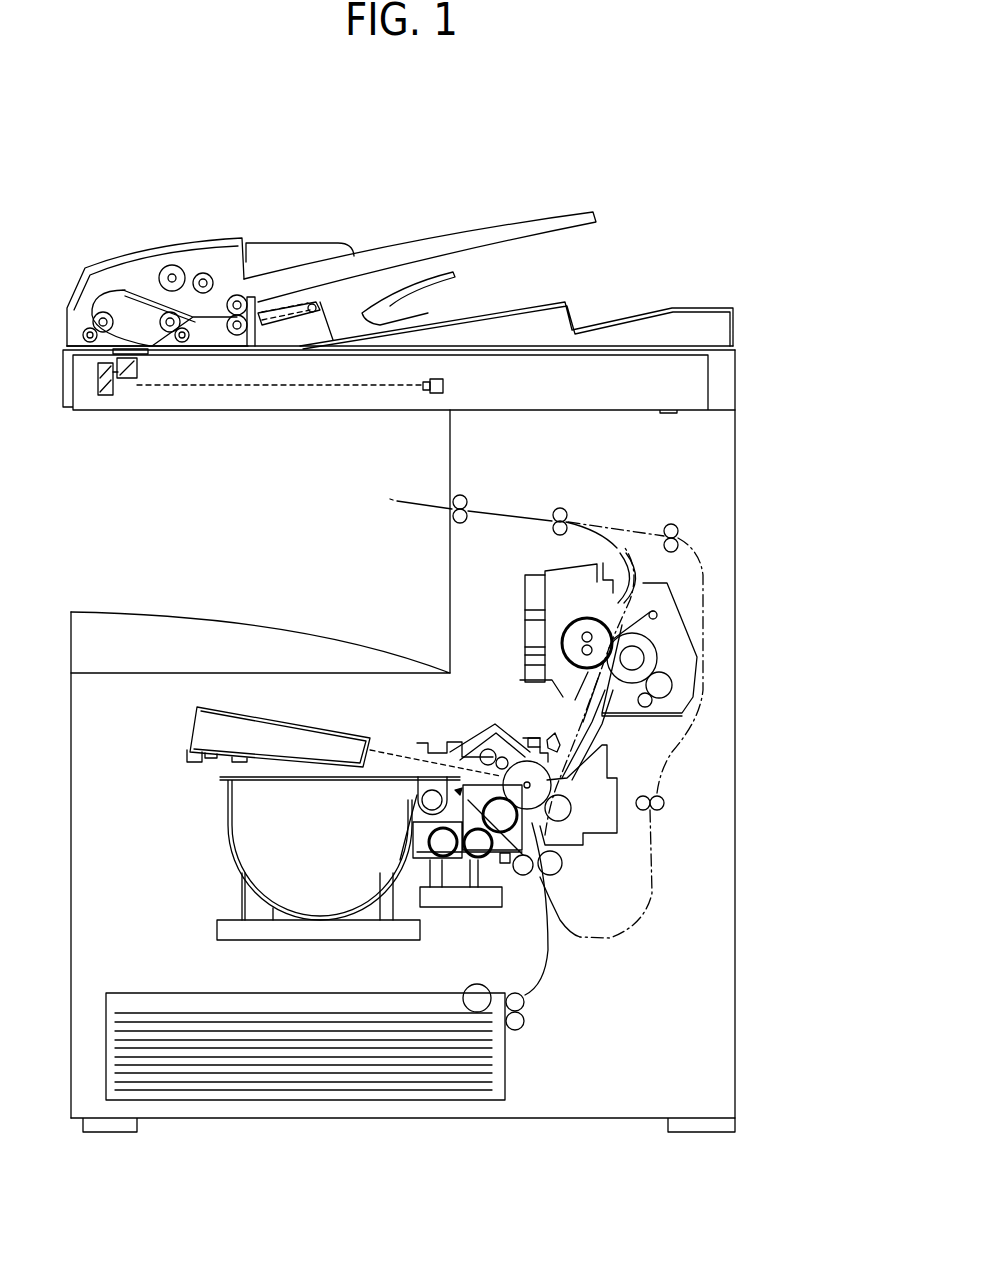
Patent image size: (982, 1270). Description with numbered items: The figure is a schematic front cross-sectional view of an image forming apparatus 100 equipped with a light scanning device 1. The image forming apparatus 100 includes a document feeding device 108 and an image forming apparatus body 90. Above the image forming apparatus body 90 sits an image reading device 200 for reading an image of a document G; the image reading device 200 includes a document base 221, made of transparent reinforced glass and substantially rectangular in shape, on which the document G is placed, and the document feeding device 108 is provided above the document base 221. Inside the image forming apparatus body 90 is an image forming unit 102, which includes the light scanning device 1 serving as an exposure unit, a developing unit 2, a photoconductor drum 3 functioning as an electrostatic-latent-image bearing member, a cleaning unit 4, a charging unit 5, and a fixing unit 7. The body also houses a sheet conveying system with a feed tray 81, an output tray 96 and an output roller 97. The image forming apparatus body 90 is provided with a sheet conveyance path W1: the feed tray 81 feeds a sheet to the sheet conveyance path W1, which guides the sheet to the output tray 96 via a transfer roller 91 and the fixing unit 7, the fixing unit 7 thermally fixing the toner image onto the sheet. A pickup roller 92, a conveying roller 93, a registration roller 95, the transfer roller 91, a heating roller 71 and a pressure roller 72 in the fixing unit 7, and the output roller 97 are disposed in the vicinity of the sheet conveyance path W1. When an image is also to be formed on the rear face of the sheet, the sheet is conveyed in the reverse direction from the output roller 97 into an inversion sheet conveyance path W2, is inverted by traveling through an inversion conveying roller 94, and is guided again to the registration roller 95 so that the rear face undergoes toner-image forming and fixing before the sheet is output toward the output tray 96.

The image forming apparatus 100 is at (190, 149).
The image reading device 200 is at (738, 380).
The image forming apparatus body 90 is at (738, 460).
The document feeding device 108 is at (167, 240).
The document G is at (382, 233).
The document base 221 is at (465, 355).
The output tray 96 is at (332, 630).
The output roller 97 is at (468, 502).
The conveying roller 93 is at (567, 515).
The inversion conveying roller 94 is at (672, 524).
The fixing unit 7 is at (688, 628).
The heating roller 71 is at (570, 647).
The pressure roller 72 is at (650, 660).
The sheet conveyance path W1 is at (570, 717).
The inversion sheet conveyance path W2 is at (672, 752).
The light scanning device 1 is at (348, 743).
The charging unit 5 is at (490, 752).
The cleaning unit 4 is at (485, 750).
The photoconductor drum 3 is at (532, 770).
The developing unit 2 is at (490, 843).
The transfer roller 91 is at (566, 808).
The registration roller 95 is at (555, 870).
The pickup roller 92 is at (478, 995).
The image forming unit 102 is at (478, 910).
The feed tray 81 is at (137, 1003).